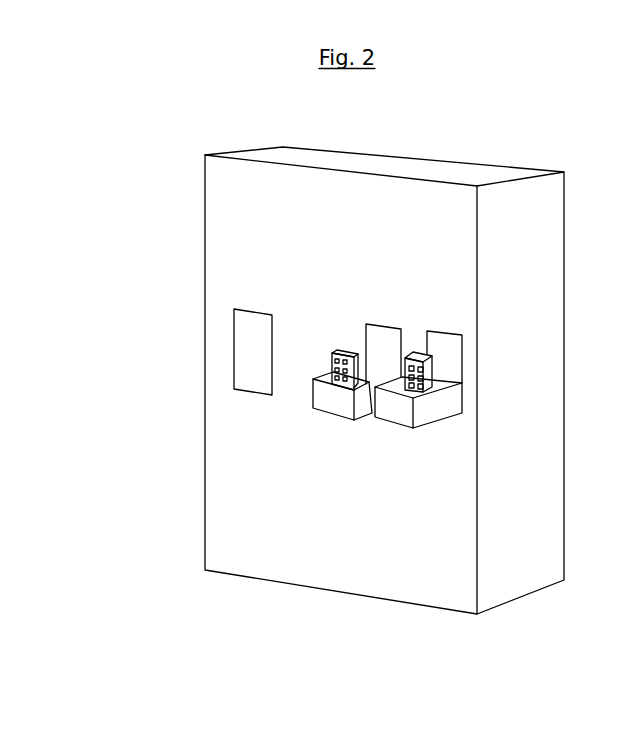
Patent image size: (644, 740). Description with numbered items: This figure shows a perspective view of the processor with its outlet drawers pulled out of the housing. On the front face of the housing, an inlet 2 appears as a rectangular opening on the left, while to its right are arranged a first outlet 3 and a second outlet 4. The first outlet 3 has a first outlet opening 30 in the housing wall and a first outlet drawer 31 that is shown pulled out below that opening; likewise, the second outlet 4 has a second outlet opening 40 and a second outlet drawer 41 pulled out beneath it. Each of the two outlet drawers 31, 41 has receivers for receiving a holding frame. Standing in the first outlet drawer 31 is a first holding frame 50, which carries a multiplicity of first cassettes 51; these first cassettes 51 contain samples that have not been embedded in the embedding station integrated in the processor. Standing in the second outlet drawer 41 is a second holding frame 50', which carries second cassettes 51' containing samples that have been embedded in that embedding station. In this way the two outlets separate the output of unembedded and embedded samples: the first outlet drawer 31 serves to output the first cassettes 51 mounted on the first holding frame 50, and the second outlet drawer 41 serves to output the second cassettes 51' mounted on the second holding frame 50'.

The inlet 2 is at (214, 333).
The first outlet 3 is at (257, 337).
The second outlet 4 is at (475, 469).
The first outlet opening 30 is at (380, 342).
The first outlet drawer 31 is at (327, 397).
The second outlet opening 40 is at (445, 349).
The second outlet drawer 41 is at (443, 405).
The first holding frame 50 is at (331, 249).
The first cassettes 51 is at (285, 248).
The second holding frame 50' is at (518, 341).
The second cassettes 51' is at (519, 363).